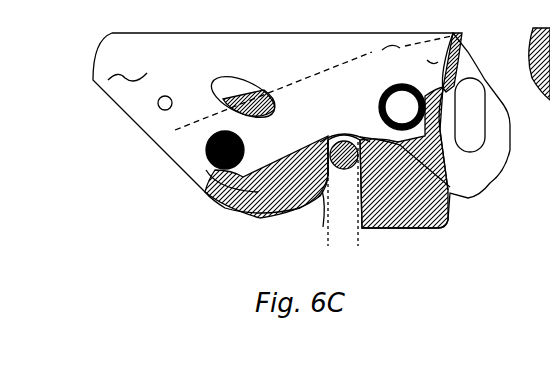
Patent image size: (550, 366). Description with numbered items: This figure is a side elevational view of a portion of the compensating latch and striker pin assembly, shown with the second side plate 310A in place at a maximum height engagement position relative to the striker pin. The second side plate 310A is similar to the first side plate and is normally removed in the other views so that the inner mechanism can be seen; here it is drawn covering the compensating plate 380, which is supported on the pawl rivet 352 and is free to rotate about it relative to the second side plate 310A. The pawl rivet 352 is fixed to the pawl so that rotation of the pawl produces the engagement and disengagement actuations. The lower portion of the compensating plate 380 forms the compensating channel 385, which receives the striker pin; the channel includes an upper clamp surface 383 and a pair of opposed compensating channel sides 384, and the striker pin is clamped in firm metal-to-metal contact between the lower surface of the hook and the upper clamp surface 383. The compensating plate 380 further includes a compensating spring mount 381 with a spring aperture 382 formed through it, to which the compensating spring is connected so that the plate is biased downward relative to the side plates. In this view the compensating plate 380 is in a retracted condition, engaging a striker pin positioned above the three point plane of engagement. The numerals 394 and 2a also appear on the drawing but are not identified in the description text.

The second side plate 310A is at (134, 108).
The pawl rivet 352 is at (212, 166).
The compensating plate 380 is at (270, 212).
The compensating channel 385 is at (312, 212).
The upper clamp surface 383 is at (322, 136).
The compensating channel sides 384 is at (323, 220).
The support region 394 is at (370, 187).
The rod 2a is at (348, 237).
The spring aperture 382 is at (470, 50).
The compensating spring mount 381 is at (373, 82).